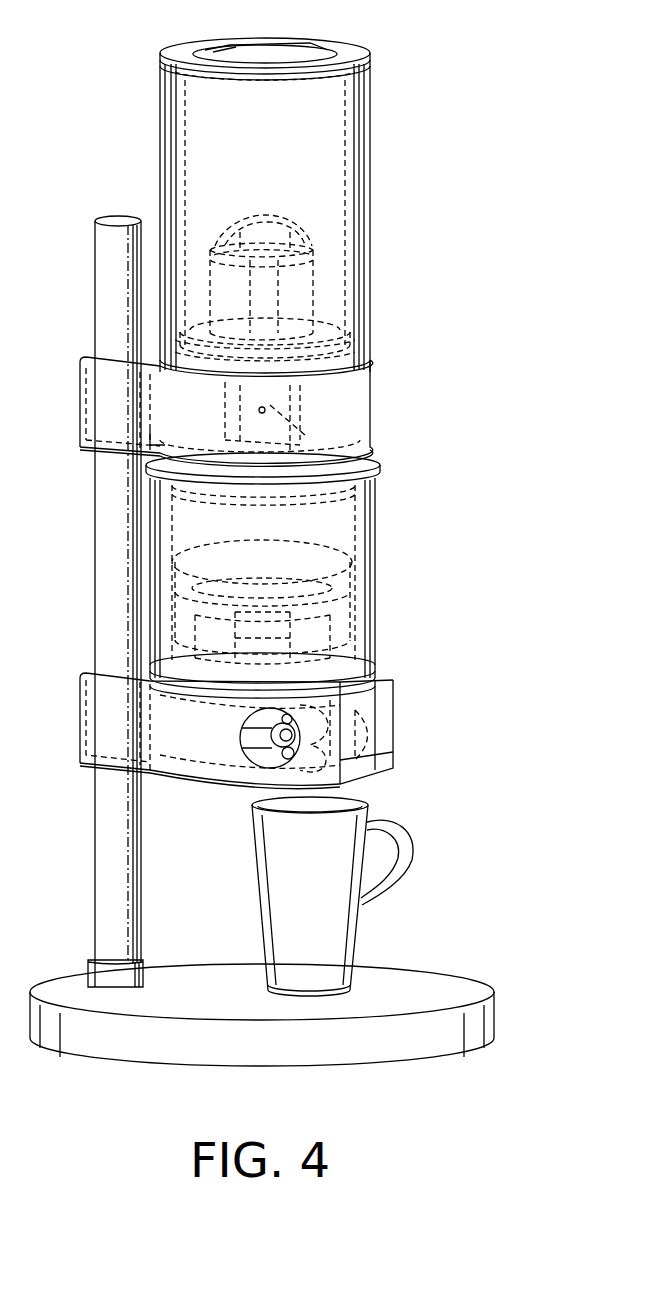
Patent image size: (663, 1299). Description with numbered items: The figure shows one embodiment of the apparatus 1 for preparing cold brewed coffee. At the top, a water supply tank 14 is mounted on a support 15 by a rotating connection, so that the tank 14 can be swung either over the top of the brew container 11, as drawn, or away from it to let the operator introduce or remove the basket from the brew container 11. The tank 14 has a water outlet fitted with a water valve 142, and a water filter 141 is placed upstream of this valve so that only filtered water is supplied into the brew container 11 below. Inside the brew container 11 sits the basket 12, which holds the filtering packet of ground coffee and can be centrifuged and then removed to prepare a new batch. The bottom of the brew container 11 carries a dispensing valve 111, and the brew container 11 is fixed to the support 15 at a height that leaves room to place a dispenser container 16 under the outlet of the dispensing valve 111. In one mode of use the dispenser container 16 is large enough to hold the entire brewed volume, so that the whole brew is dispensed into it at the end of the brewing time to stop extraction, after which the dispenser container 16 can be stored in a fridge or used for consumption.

The apparatus 1 is at (485, 62).
The brew container 11 is at (376, 541).
The dispensing valve 111 is at (395, 727).
The basket 12 is at (365, 607).
The water supply tank 14 is at (372, 211).
The water filter 141 is at (375, 308).
The water valve 142 is at (330, 410).
The support means 15 is at (112, 586).
The dispenser container 16 is at (258, 895).